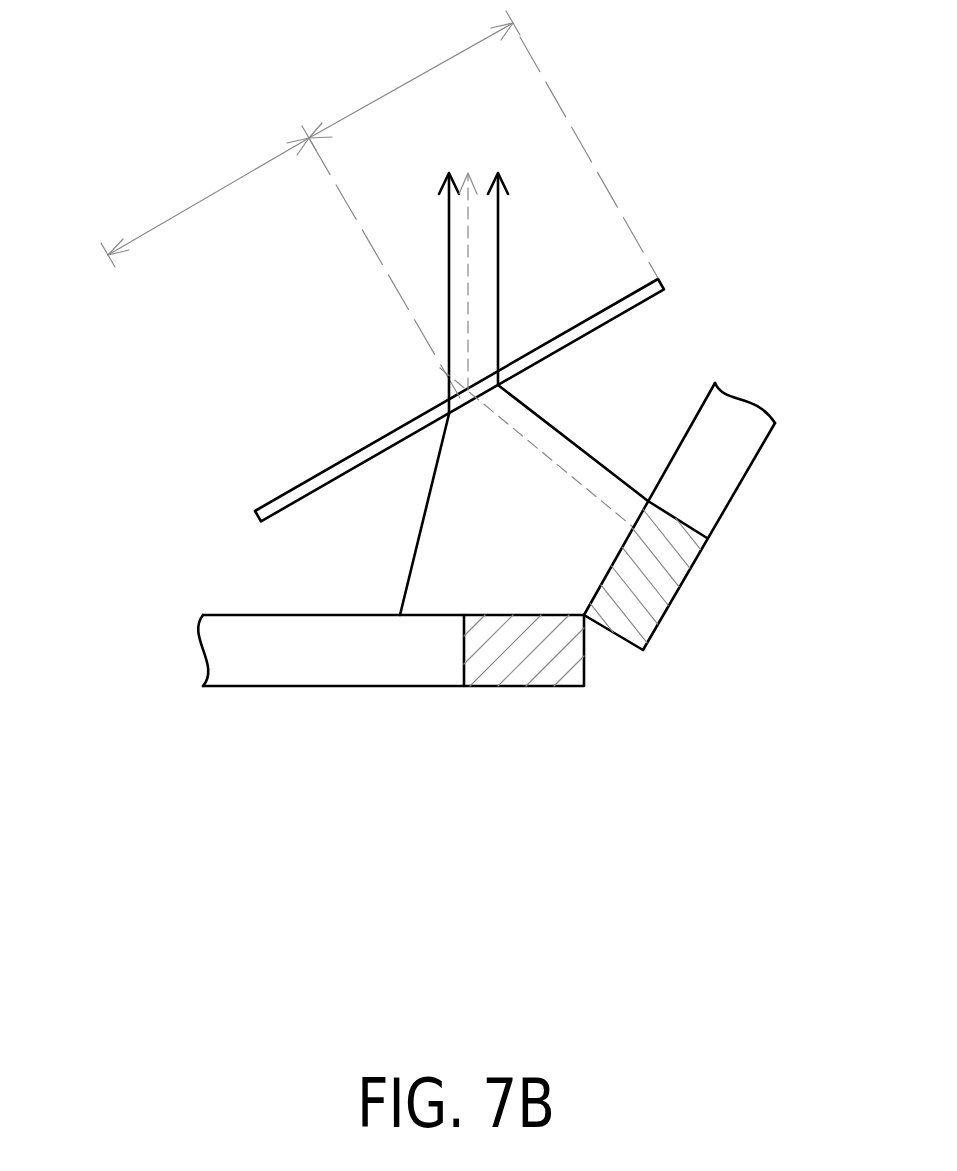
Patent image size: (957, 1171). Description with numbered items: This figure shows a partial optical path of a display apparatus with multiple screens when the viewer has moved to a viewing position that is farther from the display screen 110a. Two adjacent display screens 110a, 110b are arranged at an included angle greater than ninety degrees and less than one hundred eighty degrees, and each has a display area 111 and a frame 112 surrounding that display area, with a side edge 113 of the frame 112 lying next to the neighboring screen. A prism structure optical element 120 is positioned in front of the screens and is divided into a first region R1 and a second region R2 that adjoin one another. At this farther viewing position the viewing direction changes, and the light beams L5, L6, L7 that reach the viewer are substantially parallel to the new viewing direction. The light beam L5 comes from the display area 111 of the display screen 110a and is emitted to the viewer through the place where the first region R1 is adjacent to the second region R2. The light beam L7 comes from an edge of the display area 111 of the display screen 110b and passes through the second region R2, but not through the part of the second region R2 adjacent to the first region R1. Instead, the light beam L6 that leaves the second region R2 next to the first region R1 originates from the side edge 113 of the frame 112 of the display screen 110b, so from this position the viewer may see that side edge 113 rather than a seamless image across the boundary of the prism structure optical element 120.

The display screen 110a is at (310, 777).
The display screen 110b is at (638, 770).
The display area 111 is at (383, 665).
The frame 112 is at (498, 672).
The side edge 113 is at (568, 647).
The prism structure optical element 120 is at (232, 520).
The light beam L5 is at (449, 255).
The light beam L6 is at (468, 227).
The light beam L7 is at (498, 226).
The first region R1 is at (280, 262).
The second region R2 is at (483, 144).